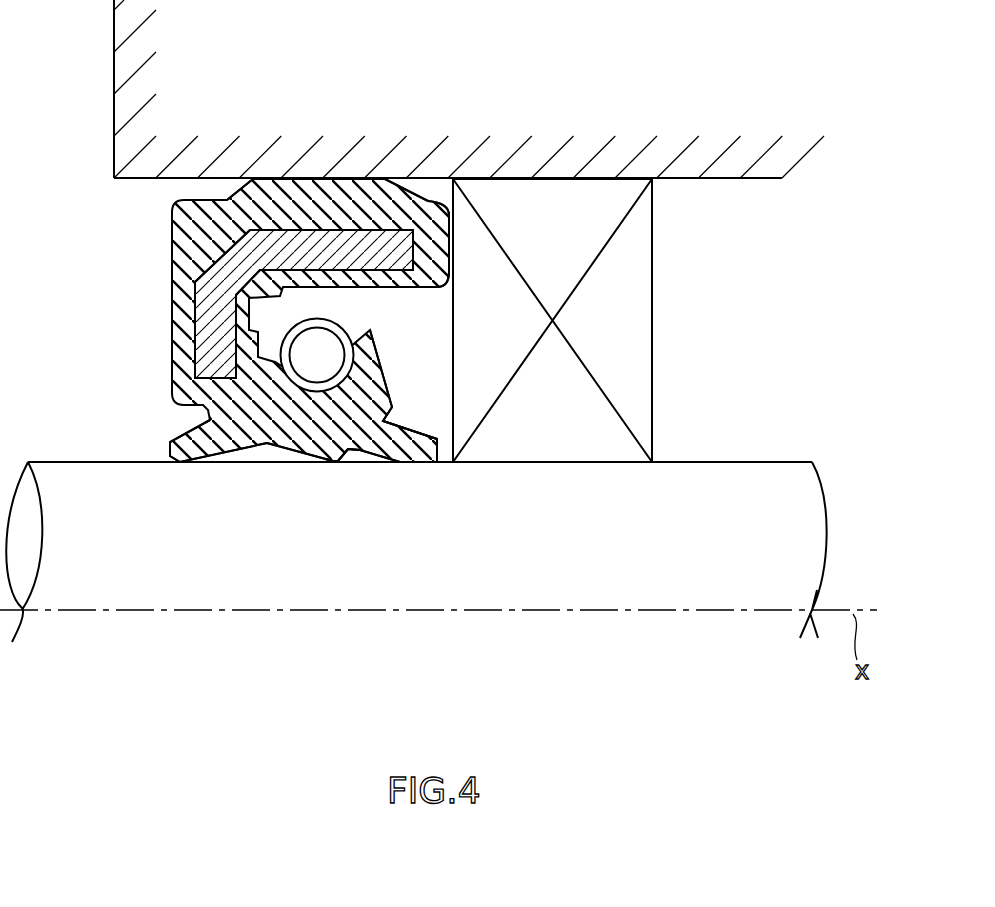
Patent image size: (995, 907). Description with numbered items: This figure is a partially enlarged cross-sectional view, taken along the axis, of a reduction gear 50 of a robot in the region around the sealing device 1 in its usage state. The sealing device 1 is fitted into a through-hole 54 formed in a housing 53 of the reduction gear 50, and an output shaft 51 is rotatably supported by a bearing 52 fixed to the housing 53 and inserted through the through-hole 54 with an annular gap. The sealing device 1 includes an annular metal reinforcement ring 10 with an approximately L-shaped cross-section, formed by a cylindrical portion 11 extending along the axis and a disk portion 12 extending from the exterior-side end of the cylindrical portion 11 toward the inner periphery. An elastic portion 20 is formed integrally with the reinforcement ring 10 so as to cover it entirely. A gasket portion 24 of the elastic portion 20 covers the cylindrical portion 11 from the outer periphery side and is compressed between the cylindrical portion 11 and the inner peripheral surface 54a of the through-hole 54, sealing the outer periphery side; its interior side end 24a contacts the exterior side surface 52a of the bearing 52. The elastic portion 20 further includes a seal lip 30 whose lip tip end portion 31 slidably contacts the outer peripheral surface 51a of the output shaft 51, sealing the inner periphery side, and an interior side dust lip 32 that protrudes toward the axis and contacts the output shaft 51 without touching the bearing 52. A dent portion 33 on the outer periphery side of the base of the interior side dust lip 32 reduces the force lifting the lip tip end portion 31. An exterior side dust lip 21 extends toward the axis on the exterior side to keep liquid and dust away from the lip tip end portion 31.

The sealing device 1 is at (279, 327).
The reinforcement ring 10 is at (258, 238).
The cylindrical portion 11 is at (381, 195).
The disk portion 12 is at (215, 343).
The elastic portion 20 is at (280, 327).
The exterior side dust lip 21 is at (165, 438).
The gasket portion 24 is at (314, 197).
The interior side end 24a is at (453, 233).
The seal lip 30 is at (355, 442).
The lip tip end portion 31 is at (335, 463).
The interior side dust lip 32 is at (437, 463).
The dent portion 33 is at (386, 421).
The reduction gear 50 is at (456, 144).
The output shaft 51 is at (458, 521).
The outer peripheral surface 51a is at (757, 453).
The bearing 52 is at (586, 320).
The exterior side surface 52a is at (452, 392).
The housing 53 is at (148, 91).
The through-hole 54 is at (489, 212).
The inner peripheral surface 54a is at (745, 181).